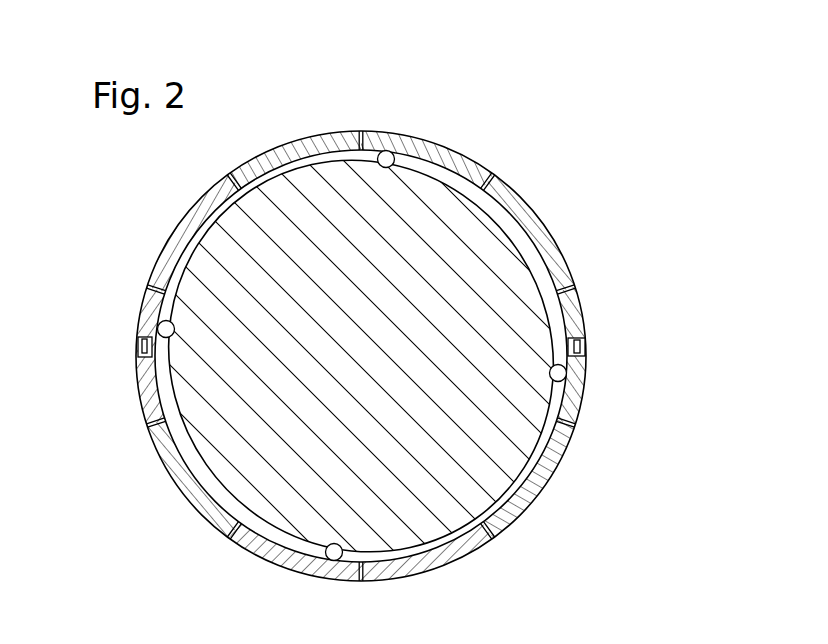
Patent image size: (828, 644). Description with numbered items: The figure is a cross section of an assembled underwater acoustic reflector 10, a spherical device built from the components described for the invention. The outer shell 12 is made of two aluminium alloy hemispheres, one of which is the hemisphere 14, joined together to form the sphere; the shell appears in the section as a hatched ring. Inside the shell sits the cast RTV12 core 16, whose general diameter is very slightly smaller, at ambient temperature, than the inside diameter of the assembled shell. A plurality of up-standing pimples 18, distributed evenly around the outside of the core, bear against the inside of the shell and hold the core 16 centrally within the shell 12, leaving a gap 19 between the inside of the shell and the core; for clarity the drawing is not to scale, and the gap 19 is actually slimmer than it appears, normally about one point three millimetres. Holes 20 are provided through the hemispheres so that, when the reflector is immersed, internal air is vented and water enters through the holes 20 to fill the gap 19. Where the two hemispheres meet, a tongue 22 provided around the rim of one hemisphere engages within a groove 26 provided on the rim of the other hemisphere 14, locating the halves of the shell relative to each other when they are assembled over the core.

The acoustic reflector 10 is at (414, 355).
The shell 12 is at (361, 355).
The hemisphere 14 is at (258, 160).
The core 16 is at (510, 242).
The pimples 18 is at (388, 151).
The gap 19 is at (450, 178).
The holes 20 is at (493, 538).
The tongue 22 is at (578, 337).
The groove 26 is at (586, 347).